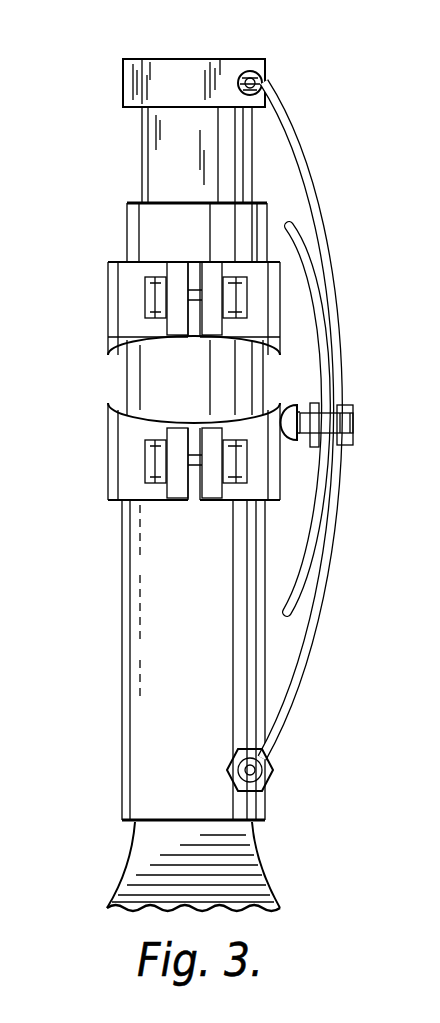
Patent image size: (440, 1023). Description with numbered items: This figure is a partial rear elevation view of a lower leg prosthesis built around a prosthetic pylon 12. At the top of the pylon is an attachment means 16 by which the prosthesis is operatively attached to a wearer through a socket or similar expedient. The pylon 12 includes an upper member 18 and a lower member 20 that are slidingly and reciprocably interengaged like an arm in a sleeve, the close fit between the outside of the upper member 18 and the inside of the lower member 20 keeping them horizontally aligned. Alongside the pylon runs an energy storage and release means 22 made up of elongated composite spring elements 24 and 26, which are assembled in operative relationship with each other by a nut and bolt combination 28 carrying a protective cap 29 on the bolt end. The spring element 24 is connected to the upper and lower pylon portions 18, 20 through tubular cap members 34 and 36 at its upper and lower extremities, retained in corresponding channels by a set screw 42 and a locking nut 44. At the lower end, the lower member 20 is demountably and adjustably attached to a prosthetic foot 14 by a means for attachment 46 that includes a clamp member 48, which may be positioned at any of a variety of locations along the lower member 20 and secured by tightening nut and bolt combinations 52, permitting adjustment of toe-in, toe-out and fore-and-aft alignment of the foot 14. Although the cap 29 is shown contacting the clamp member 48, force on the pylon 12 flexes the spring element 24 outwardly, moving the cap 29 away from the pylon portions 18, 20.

The prosthetic pylon 12 is at (98, 384).
The prosthetic foot 14 is at (115, 871).
The attachment means 16 is at (197, 58).
The upper member 18 is at (152, 150).
The lower member 20 is at (122, 668).
The energy storage and release means 22 is at (342, 420).
The spring element 24 is at (323, 232).
The spring element 26 is at (299, 598).
The nut and bolt combination 28 is at (353, 428).
The protective cap 29 is at (290, 405).
The tubular cap member 34 is at (252, 71).
The tubular cap member 36 is at (272, 765).
The set screw 42 is at (262, 80).
The locking nut 44 is at (273, 778).
The means for attachment 46 is at (93, 325).
The clamp member 48 is at (108, 468).
The nut and bolt combinations 52 is at (147, 297).